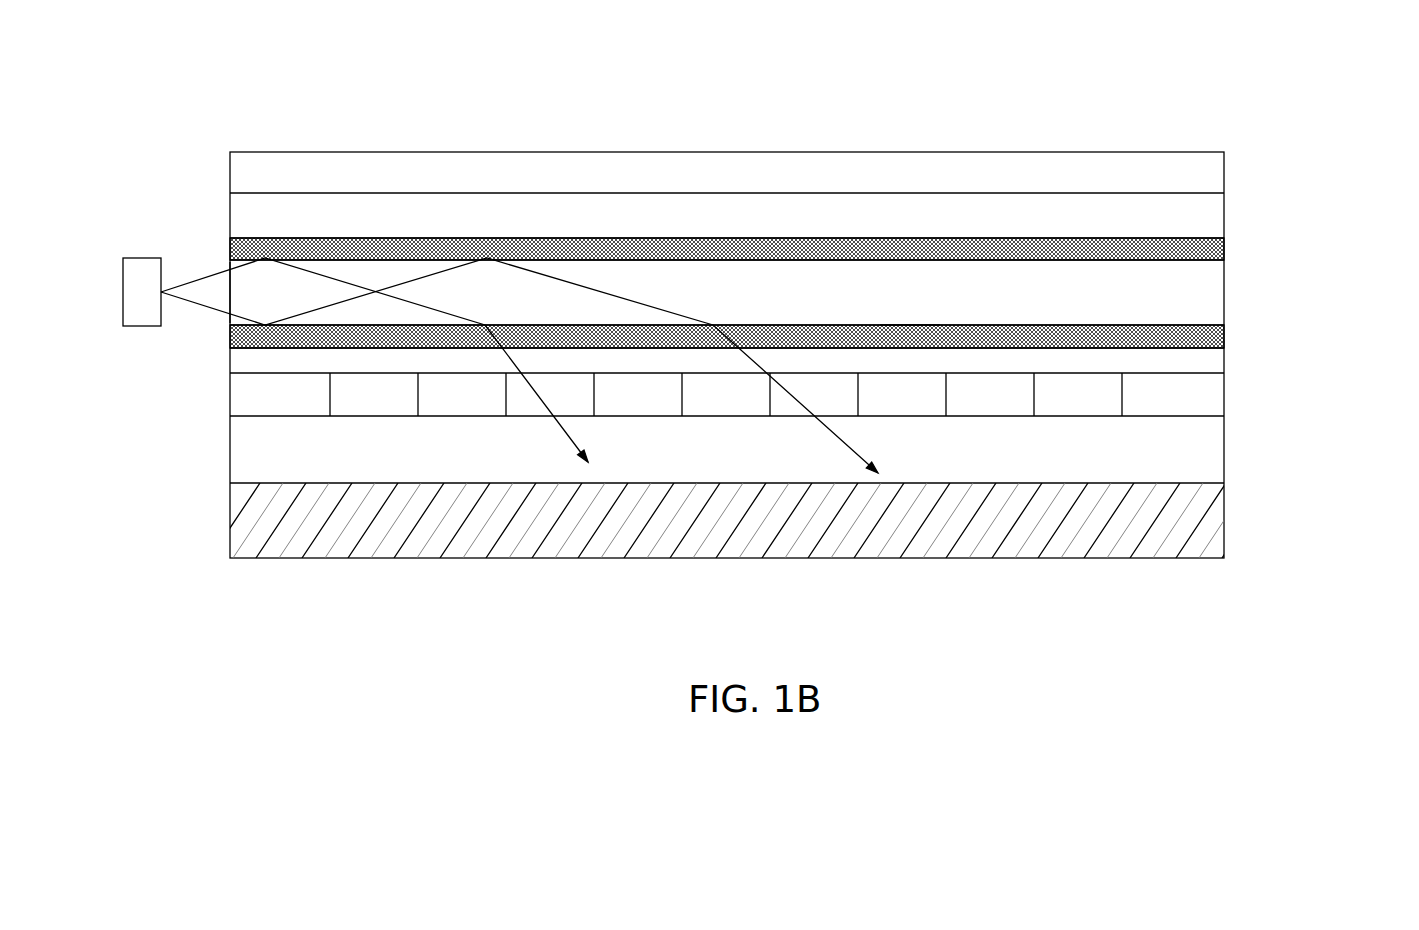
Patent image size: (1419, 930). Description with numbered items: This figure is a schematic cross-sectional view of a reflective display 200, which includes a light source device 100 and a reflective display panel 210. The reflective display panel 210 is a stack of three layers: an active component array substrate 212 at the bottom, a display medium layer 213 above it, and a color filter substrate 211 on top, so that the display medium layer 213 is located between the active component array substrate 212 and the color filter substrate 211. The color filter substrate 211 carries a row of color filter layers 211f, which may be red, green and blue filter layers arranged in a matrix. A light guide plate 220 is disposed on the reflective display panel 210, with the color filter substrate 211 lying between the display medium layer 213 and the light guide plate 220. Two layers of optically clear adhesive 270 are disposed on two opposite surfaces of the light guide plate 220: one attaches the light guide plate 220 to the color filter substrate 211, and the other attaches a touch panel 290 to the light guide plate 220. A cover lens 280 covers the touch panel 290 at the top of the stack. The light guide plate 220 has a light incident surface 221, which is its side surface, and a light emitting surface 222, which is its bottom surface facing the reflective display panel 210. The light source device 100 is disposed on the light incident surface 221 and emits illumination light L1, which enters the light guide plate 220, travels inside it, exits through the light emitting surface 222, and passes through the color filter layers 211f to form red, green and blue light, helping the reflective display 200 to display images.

The reflective display 200 is at (136, 63).
The light source device 100 is at (133, 292).
The cover lens 280 is at (1205, 178).
The touch panel 290 is at (1205, 218).
The optically clear adhesive 270 is at (400, 240).
The light guide plate 220 is at (1205, 290).
The light incident surface 221 is at (220, 297).
The light emitting surface 222 is at (908, 345).
The reflective display panel 210 is at (742, 447).
The color filter substrate 211 is at (698, 414).
The color filter layers 211f is at (245, 397).
The display medium layer 213 is at (1205, 450).
The active component array substrate 212 is at (765, 520).
The illumination light L1 is at (627, 300).